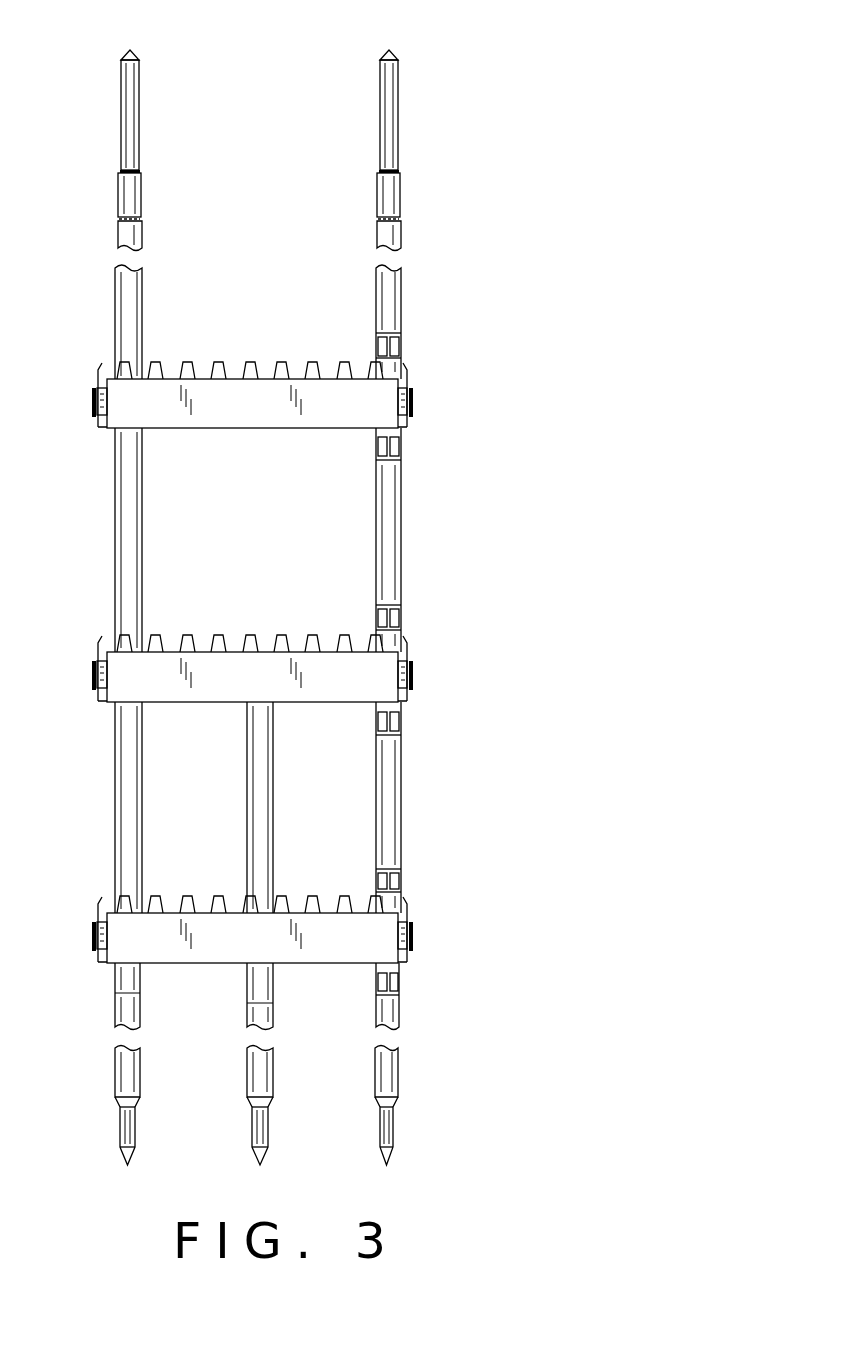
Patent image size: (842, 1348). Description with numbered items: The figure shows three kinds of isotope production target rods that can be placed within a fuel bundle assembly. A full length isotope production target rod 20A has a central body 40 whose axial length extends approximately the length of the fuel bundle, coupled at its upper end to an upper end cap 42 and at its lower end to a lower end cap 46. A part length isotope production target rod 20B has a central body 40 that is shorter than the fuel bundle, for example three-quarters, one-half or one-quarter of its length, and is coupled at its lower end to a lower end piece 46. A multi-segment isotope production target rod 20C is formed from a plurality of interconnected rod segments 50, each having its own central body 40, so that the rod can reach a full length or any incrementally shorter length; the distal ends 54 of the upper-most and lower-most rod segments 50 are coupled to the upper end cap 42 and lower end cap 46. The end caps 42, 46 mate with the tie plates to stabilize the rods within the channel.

The full length isotope production target rod 20A is at (152, 44).
The part length isotope production target rod 20B is at (277, 1177).
The multi-segment isotope production target rod 20C is at (410, 37).
The central body 40 is at (395, 297).
The upper end cap 42 is at (127, 137).
The lower end cap 46 is at (123, 1133).
The rod segment 50 is at (446, 231).
The distal end 54 is at (382, 230).